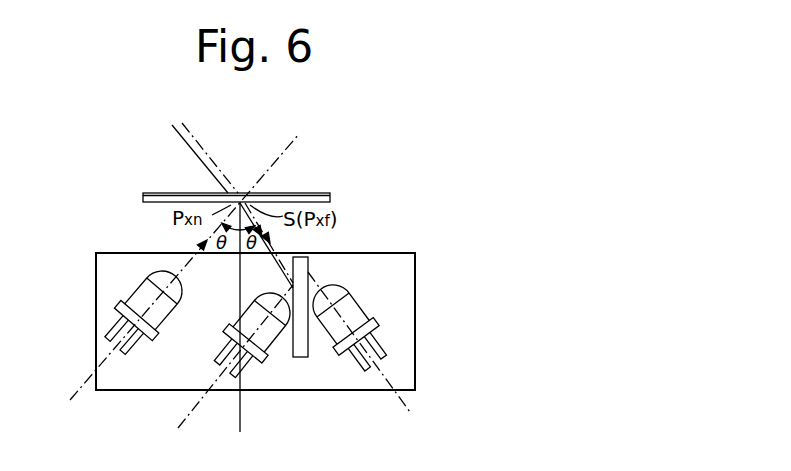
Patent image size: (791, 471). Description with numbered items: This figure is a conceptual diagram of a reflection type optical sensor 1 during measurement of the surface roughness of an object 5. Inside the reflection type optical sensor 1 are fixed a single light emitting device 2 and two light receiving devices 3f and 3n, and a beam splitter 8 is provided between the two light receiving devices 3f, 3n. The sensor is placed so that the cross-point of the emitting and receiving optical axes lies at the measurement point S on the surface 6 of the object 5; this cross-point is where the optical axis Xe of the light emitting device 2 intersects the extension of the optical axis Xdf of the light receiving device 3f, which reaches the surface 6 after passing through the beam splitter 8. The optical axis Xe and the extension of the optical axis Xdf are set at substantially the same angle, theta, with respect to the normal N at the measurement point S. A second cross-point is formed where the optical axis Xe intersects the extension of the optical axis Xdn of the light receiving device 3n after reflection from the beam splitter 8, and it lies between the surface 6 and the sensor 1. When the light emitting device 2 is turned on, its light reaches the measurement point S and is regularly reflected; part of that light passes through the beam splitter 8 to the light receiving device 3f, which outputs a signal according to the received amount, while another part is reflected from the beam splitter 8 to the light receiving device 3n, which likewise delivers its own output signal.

The reflection type optical sensor 1 is at (383, 253).
The light emitting device 2 is at (150, 292).
The light receiving device 3n is at (266, 333).
The light receiving device 3f is at (348, 313).
The object 5 is at (165, 192).
The surface 6 is at (152, 205).
The beam splitter 8 is at (302, 357).
The optical axis of the light emitting device Xe is at (193, 258).
The normal N is at (240, 330).
The optical axis of the light receiving device 3n Xdn is at (176, 137).
The optical axis of the light receiving device 3f Xdf is at (188, 135).